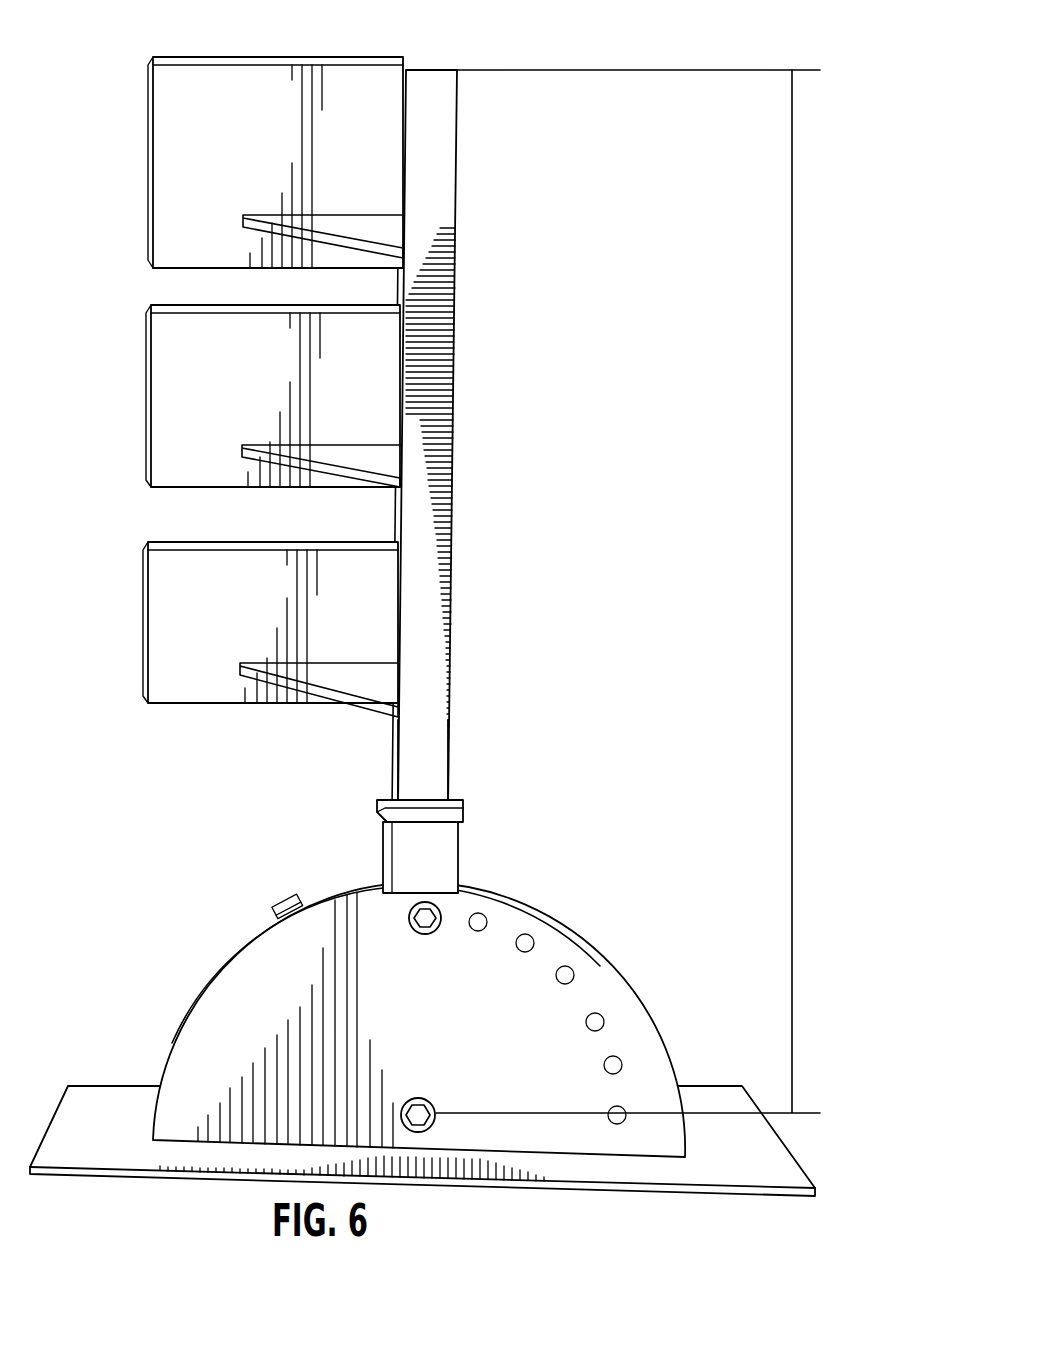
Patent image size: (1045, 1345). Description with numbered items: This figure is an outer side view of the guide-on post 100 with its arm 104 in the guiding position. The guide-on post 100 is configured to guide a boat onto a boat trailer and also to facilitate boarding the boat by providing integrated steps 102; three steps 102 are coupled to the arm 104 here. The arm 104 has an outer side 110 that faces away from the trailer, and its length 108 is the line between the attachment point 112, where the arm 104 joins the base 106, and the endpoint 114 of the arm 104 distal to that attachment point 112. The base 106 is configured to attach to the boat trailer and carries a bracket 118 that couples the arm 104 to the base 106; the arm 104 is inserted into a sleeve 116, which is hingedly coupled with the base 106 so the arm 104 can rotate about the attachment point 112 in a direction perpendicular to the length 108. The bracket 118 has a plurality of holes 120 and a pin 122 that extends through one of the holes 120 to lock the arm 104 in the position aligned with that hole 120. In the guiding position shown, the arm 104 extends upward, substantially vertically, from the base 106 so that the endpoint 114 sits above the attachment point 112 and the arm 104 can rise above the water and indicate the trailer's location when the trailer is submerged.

The guide-on post 100 is at (90, 92).
The step 102 is at (185, 200).
The arm 104 is at (432, 240).
The base 106 is at (105, 1095).
The length 108 is at (792, 600).
The outer side 110 is at (425, 742).
The attachment point 112 is at (430, 1112).
The endpoint 114 is at (432, 68).
The sleeve 116 is at (407, 848).
The bracket 118 is at (245, 1010).
The holes 120 is at (565, 975).
The pin 122 is at (412, 920).